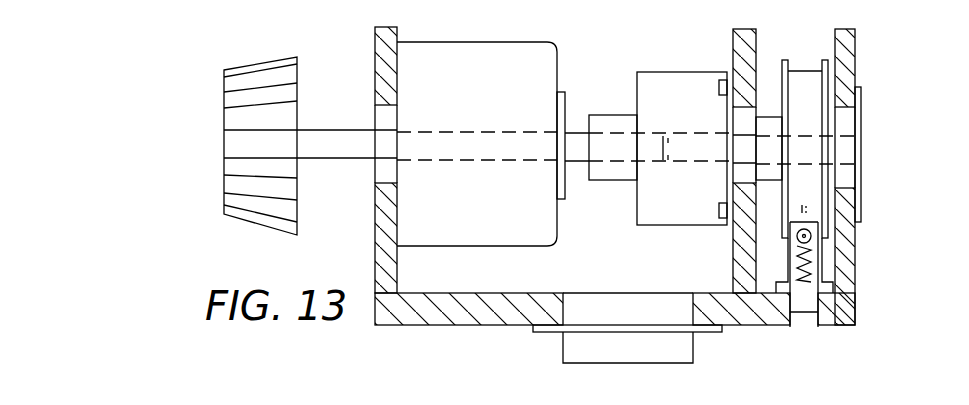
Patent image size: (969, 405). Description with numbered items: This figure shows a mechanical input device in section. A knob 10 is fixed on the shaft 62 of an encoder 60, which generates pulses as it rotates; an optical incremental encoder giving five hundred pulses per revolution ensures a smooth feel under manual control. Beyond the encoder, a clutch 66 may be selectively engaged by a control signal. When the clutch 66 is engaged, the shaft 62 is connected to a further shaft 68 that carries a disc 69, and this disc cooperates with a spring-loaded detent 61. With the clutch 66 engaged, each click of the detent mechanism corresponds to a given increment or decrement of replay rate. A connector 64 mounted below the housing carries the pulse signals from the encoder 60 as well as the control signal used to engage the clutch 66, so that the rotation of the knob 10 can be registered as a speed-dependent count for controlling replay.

The knob 10 is at (263, 228).
The shaft 62 is at (325, 147).
The encoder 60 is at (477, 42).
The clutch 66 is at (658, 226).
The disc 69 is at (803, 85).
The shaft 68 is at (845, 151).
The spring-loaded detent 61 is at (808, 263).
The connector 64 is at (680, 345).